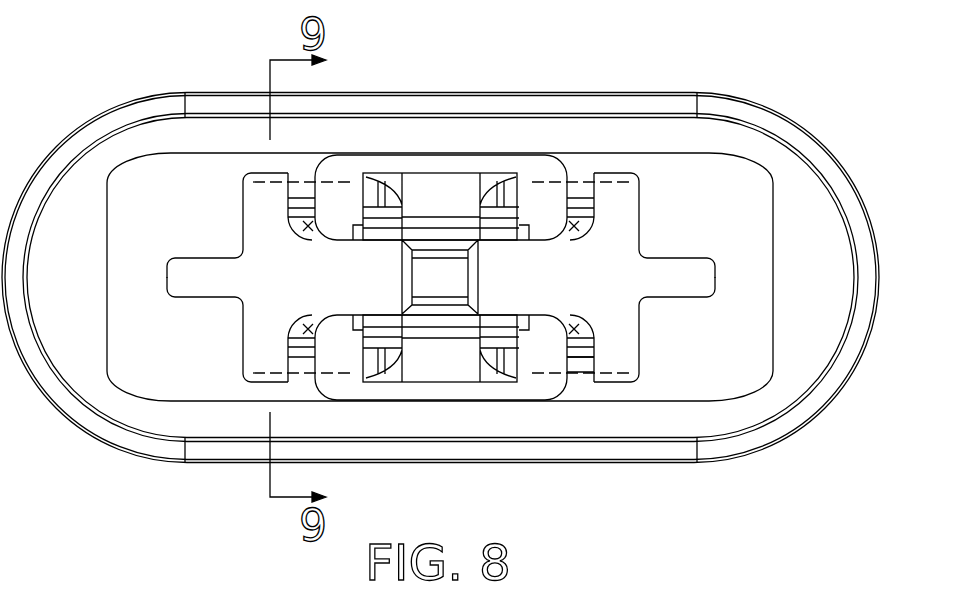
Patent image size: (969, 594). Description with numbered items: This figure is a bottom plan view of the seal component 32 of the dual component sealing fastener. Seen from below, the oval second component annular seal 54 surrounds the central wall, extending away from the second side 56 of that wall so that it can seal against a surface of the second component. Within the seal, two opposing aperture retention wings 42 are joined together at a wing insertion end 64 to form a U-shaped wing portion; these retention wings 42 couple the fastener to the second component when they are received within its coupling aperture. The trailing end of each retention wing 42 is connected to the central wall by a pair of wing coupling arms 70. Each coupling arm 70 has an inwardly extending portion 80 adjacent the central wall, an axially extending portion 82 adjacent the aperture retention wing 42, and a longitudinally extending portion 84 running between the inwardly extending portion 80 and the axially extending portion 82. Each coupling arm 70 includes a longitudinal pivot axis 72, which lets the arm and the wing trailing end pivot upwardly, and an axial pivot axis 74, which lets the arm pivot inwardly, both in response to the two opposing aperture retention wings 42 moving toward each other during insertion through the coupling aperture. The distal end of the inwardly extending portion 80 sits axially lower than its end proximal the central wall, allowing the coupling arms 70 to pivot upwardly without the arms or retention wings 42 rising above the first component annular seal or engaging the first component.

The seal component 32 is at (833, 125).
The aperture retention wings 42 is at (437, 198).
The second component annular seal 54 is at (819, 415).
The second side 56 is at (715, 218).
The wing insertion end 64 is at (433, 283).
The wing coupling arm 70 is at (597, 328).
The longitudinal pivot axis 72 is at (262, 182).
The axial pivot axis 74 is at (311, 237).
The inwardly extending portion 80 is at (578, 350).
The axially extending portion 82 is at (504, 320).
The longitudinally extending portion 84 is at (537, 322).